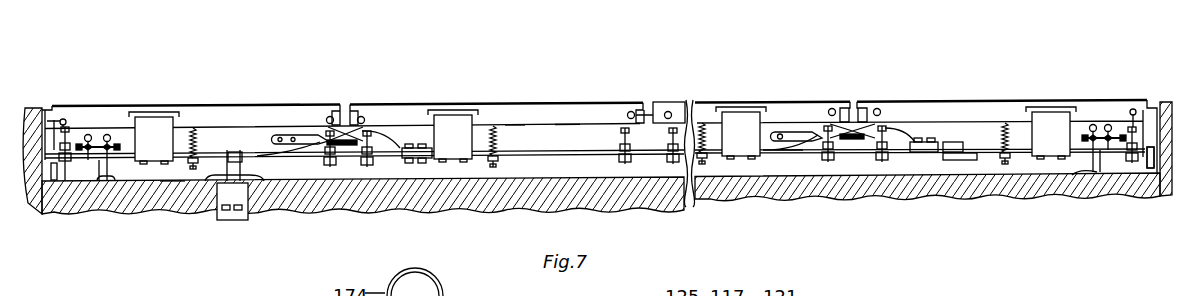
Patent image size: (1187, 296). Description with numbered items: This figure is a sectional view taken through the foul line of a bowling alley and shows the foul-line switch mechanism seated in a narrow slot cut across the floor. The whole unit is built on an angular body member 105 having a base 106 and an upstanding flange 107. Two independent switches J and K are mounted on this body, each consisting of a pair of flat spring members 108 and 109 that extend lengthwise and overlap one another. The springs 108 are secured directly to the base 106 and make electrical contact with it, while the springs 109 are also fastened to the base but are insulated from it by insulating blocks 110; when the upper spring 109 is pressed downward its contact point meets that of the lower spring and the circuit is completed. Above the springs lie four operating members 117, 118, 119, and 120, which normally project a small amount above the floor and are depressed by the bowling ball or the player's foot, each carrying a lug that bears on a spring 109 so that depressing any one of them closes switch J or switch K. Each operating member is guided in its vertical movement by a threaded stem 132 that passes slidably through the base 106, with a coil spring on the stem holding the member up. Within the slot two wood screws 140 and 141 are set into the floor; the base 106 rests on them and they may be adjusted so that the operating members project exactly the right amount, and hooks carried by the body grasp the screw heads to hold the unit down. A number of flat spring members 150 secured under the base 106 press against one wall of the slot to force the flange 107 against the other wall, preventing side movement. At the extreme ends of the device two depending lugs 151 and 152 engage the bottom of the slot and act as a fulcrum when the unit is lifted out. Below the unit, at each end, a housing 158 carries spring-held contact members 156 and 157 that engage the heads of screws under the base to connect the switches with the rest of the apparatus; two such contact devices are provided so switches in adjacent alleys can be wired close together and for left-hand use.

The angular body member 105 is at (513, 130).
The base 106 is at (530, 153).
The upstanding flange 107 is at (567, 130).
The flat spring member 108 is at (295, 162).
The flat spring member 109 is at (387, 160).
The insulating block 110 is at (417, 158).
The operating member 117 is at (233, 112).
The operating member 118 is at (538, 117).
The operating member 119 is at (788, 105).
The operating member 120 is at (938, 112).
The threaded stem 132 is at (202, 128).
The wood screw 140 is at (108, 181).
The wood screw 141 is at (1072, 180).
The flat spring member 150 is at (148, 127).
The depending lug 151 is at (53, 178).
The depending lug 152 is at (1150, 168).
The spring held contact member 156 is at (168, 211).
The spring held contact member 157 is at (253, 220).
The housing 158 is at (227, 192).
The switch J is at (347, 147).
The switch K is at (857, 143).